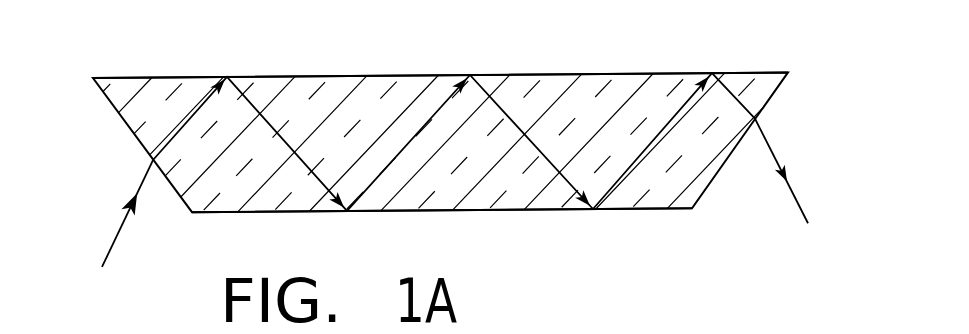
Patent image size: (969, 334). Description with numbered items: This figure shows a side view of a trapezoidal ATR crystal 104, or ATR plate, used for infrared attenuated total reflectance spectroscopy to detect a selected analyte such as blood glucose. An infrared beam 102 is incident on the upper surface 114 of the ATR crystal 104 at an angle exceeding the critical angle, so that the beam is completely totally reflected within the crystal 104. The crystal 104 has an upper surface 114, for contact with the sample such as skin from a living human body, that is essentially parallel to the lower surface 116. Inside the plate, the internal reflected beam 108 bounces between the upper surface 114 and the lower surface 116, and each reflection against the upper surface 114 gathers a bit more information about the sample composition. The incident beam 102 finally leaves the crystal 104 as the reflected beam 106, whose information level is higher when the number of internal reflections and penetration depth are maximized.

The infrared beam 102 is at (115, 233).
The ATR crystal 104 is at (313, 100).
The reflected beam 106 is at (776, 148).
The internal reflected beam 108 is at (389, 162).
The upper surface 114 is at (560, 72).
The lower surface 116 is at (500, 212).